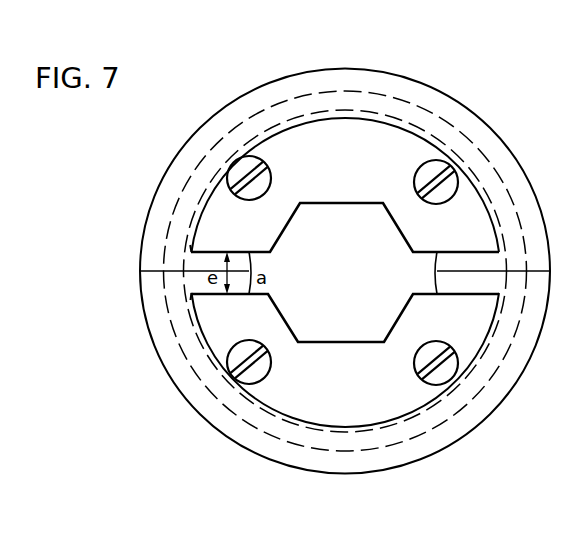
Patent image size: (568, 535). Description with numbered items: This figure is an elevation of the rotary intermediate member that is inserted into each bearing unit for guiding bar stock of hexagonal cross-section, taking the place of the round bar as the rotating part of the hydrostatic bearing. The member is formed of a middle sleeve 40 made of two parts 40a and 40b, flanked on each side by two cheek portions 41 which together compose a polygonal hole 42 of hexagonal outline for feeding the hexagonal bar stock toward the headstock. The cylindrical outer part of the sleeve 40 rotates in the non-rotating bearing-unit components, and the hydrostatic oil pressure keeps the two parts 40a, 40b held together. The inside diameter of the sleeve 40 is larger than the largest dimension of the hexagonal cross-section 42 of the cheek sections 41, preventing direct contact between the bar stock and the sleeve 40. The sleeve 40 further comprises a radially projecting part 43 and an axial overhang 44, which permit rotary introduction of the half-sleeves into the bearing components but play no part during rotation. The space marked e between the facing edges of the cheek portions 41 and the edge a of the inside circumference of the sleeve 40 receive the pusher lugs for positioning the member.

The middle sleeve 40 is at (152, 280).
The sleeve part 40a is at (202, 252).
The sleeve part 40b is at (190, 298).
The cheek portion 41 is at (277, 145).
The polygonal hole 42 is at (346, 208).
The radially projecting part 43 is at (452, 133).
The axial overhang 44 is at (498, 150).